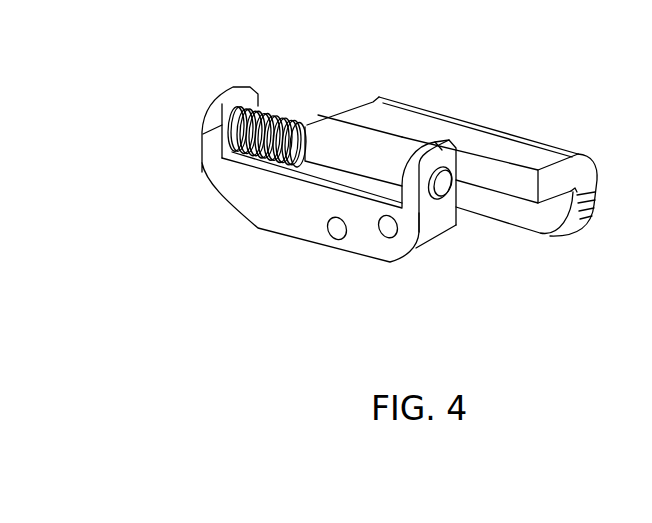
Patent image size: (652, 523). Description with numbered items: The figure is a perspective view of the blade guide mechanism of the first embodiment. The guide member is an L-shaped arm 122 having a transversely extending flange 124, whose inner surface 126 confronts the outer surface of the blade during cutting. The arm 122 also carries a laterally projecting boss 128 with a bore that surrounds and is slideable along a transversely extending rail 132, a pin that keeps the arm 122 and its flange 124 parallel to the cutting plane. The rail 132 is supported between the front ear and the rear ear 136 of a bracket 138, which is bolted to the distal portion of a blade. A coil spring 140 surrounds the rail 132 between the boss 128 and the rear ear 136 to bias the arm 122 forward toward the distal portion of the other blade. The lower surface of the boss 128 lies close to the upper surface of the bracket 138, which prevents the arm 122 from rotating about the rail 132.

The L-shaped arm 122 is at (475, 140).
The transversely extending flange 124 is at (593, 211).
The inner surface 126 is at (526, 220).
The laterally projecting boss 128 is at (328, 140).
The rail 132 is at (441, 188).
The rear ear 136 is at (213, 115).
The bracket 138 is at (283, 228).
The coil spring 140 is at (265, 112).